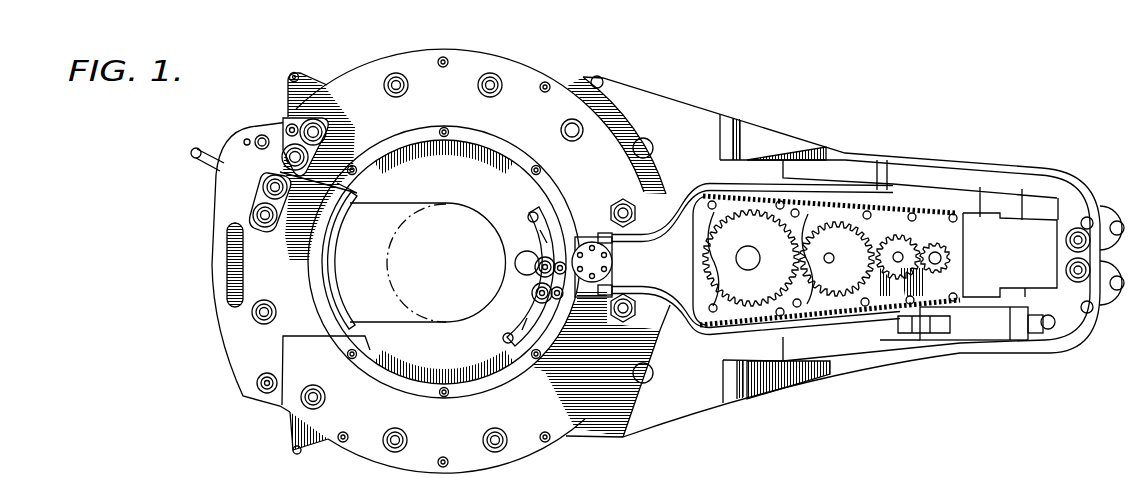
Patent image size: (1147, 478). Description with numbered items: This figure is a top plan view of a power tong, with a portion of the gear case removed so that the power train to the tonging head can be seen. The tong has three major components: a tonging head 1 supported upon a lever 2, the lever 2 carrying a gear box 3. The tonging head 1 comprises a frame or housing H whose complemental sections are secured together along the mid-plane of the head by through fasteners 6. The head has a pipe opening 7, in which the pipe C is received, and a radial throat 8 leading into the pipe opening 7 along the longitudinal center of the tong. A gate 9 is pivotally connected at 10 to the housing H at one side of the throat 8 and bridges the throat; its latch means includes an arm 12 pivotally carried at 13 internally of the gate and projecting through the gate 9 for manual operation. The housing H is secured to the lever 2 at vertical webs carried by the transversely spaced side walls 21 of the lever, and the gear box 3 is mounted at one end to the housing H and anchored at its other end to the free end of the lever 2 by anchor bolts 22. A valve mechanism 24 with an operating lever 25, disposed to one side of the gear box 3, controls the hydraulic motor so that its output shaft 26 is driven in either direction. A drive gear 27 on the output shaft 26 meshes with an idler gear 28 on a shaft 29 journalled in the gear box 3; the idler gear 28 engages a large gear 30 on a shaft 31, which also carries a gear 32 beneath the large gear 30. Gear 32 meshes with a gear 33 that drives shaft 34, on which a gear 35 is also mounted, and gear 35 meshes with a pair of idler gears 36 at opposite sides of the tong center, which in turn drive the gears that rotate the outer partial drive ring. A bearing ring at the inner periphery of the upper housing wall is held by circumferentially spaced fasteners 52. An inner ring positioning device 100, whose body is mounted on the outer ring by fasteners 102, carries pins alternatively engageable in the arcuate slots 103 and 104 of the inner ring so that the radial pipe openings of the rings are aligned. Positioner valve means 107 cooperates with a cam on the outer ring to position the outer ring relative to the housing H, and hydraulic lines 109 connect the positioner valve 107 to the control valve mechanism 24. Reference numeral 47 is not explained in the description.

The tonging head 1 is at (368, 72).
The frame or housing H is at (430, 52).
The lever 2 is at (958, 156).
The gear box 3 is at (917, 209).
The through fasteners 6 is at (548, 85).
The pipe opening 7 is at (337, 260).
The radial throat 8 is at (361, 340).
The gate 9 is at (228, 207).
The pivotal connection 10 is at (262, 385).
The arm 12 is at (205, 152).
The pivot of latch arm 13 is at (278, 188).
The side walls 21 is at (772, 136).
The anchor bolts 22 is at (1066, 268).
The valve mechanism 24 is at (990, 332).
The operating lever 25 is at (1049, 330).
The output shaft 26 is at (942, 258).
The drive gear 27 is at (946, 266).
The idler gear 28 is at (908, 248).
The shaft 29 is at (902, 262).
The large gear 30 is at (849, 245).
The shaft 31 is at (834, 259).
The gear 32 is at (810, 272).
The gear 33 is at (776, 245).
The shaft 34 is at (750, 260).
The gear 35 is at (717, 270).
The idler gears 36 is at (704, 196).
The bolt 47 is at (487, 87).
The fasteners 52 is at (352, 166).
The inner ring positioning device 100 is at (540, 270).
The fasteners 102 is at (561, 300).
The arcuate slot 103 is at (504, 337).
The arcuate slot 104 is at (531, 214).
The positioner valve means 107 is at (597, 232).
The hydraulic lines 109 is at (671, 203).
The pipe C is at (390, 243).